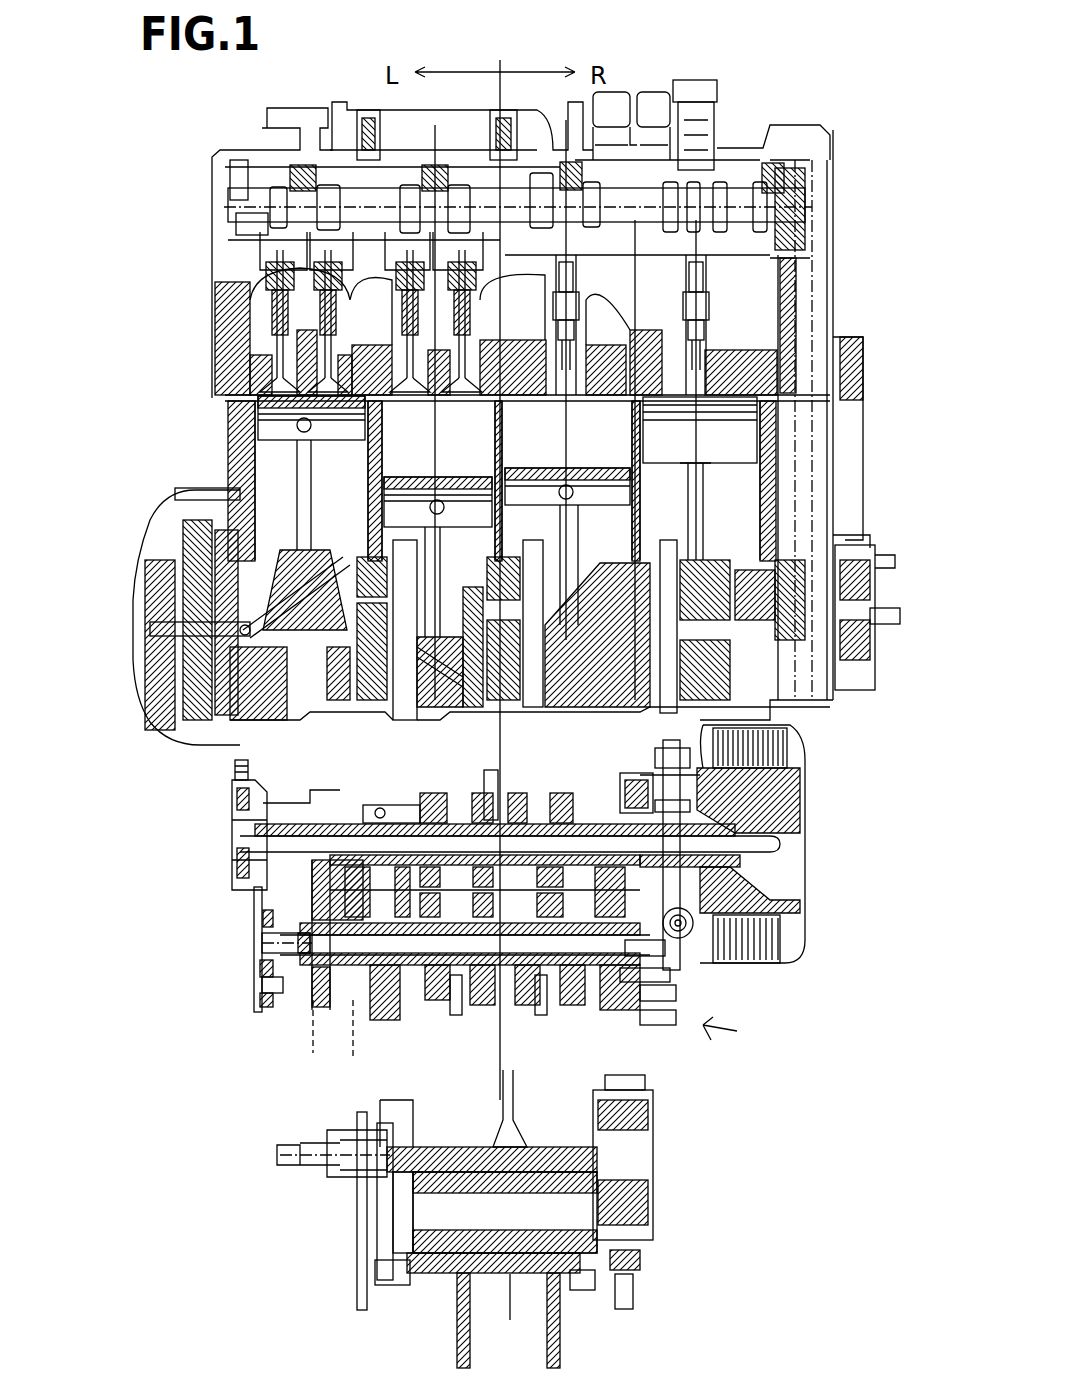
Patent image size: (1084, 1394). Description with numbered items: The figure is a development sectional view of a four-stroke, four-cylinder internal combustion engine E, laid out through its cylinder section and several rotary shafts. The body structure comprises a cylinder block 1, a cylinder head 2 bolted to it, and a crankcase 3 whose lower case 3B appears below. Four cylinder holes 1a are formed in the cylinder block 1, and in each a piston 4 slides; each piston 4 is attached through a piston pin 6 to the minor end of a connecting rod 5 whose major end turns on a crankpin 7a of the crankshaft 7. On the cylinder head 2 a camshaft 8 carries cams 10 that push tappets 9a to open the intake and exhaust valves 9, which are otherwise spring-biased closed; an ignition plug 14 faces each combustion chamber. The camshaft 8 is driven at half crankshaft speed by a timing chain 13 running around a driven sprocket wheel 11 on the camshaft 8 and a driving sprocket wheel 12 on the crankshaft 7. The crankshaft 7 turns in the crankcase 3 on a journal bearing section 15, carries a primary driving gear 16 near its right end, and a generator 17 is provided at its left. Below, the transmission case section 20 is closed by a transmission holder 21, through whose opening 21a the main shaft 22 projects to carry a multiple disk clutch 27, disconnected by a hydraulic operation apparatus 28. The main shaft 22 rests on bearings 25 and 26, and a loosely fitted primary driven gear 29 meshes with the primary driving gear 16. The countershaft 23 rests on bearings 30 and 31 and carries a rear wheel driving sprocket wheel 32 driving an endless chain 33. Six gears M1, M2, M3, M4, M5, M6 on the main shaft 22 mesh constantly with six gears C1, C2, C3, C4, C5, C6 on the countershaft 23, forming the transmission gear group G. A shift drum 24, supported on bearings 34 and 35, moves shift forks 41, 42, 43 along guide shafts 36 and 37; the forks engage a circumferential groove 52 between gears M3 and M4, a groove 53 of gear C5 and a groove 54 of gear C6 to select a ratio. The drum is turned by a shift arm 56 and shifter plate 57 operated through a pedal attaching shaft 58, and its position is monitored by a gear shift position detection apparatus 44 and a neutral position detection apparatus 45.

The internal combustion engine E is at (842, 108).
The cylinder block 1 is at (188, 435).
The cylinder hole 1a is at (862, 400).
The cylinder head 2 is at (187, 208).
The crankcase 3 is at (174, 777).
The lower case 3B is at (433, 1297).
The piston 4 is at (313, 362).
The connecting rod 5 is at (723, 467).
The piston pin 6 is at (228, 405).
The crankshaft 7 is at (745, 537).
The crankpin 7a is at (710, 497).
The camshaft 8 is at (358, 200).
The intake and exhaust valves 9 is at (327, 350).
The tappet 9a is at (260, 187).
The cam 10 is at (282, 213).
The driven sprocket wheel 11 is at (795, 170).
The driving sprocket wheel 12 is at (860, 580).
The timing chain 13 is at (810, 333).
The ignition plug 14 is at (700, 320).
The journal bearing section 15 is at (240, 688).
The primary driving gear 16 is at (663, 670).
The generator 17 is at (141, 532).
The transmission gear group G is at (376, 749).
The transmission case section 20 is at (647, 987).
The transmission holder 21 is at (653, 987).
The opening 21a is at (787, 933).
The main shaft 22 is at (690, 890).
The countershaft 23 is at (640, 943).
The shift drum 24 is at (567, 1200).
The bearing 25 is at (790, 835).
The bearing 26 is at (308, 897).
The multiple disk clutch 27 is at (798, 768).
The hydraulic operation apparatus 28 is at (230, 857).
The primary driven gear 29 is at (793, 750).
The bearing 30 is at (633, 970).
The bearing 31 is at (317, 1032).
The rear wheel driving sprocket wheel 32 is at (313, 987).
The endless chain 33 is at (327, 1033).
The bearing 34 is at (627, 1297).
The bearing 35 is at (362, 1270).
The guide shaft 36 is at (548, 1150).
The guide shaft 37 is at (512, 1277).
The shift fork 41 is at (493, 1097).
The shift fork 42 is at (558, 1307).
The shift fork 43 is at (457, 1307).
The gear shift position detection apparatus 44 is at (647, 1158).
The neutral position detection apparatus 45 is at (580, 1285).
The circumferential groove 52 is at (492, 777).
The circumferential groove 53 is at (540, 1000).
The circumferential groove 54 is at (455, 1000).
The shift arm 56 is at (360, 1223).
The shifter plate 57 is at (357, 1277).
The pedal attaching shaft 58 is at (313, 1158).
The main shaft gear M1 is at (590, 798).
The main shaft gear M2 is at (395, 802).
The main shaft gear M3 is at (477, 797).
The main shaft gear M4 is at (518, 797).
The main shaft gear M5 is at (577, 792).
The main shaft gear M6 is at (425, 797).
The countershaft gear C1 is at (583, 1032).
The countershaft gear C2 is at (393, 1023).
The countershaft gear C3 is at (477, 1010).
The countershaft gear C4 is at (522, 1007).
The countershaft gear C5 is at (548, 1013).
The countershaft gear C6 is at (437, 1007).